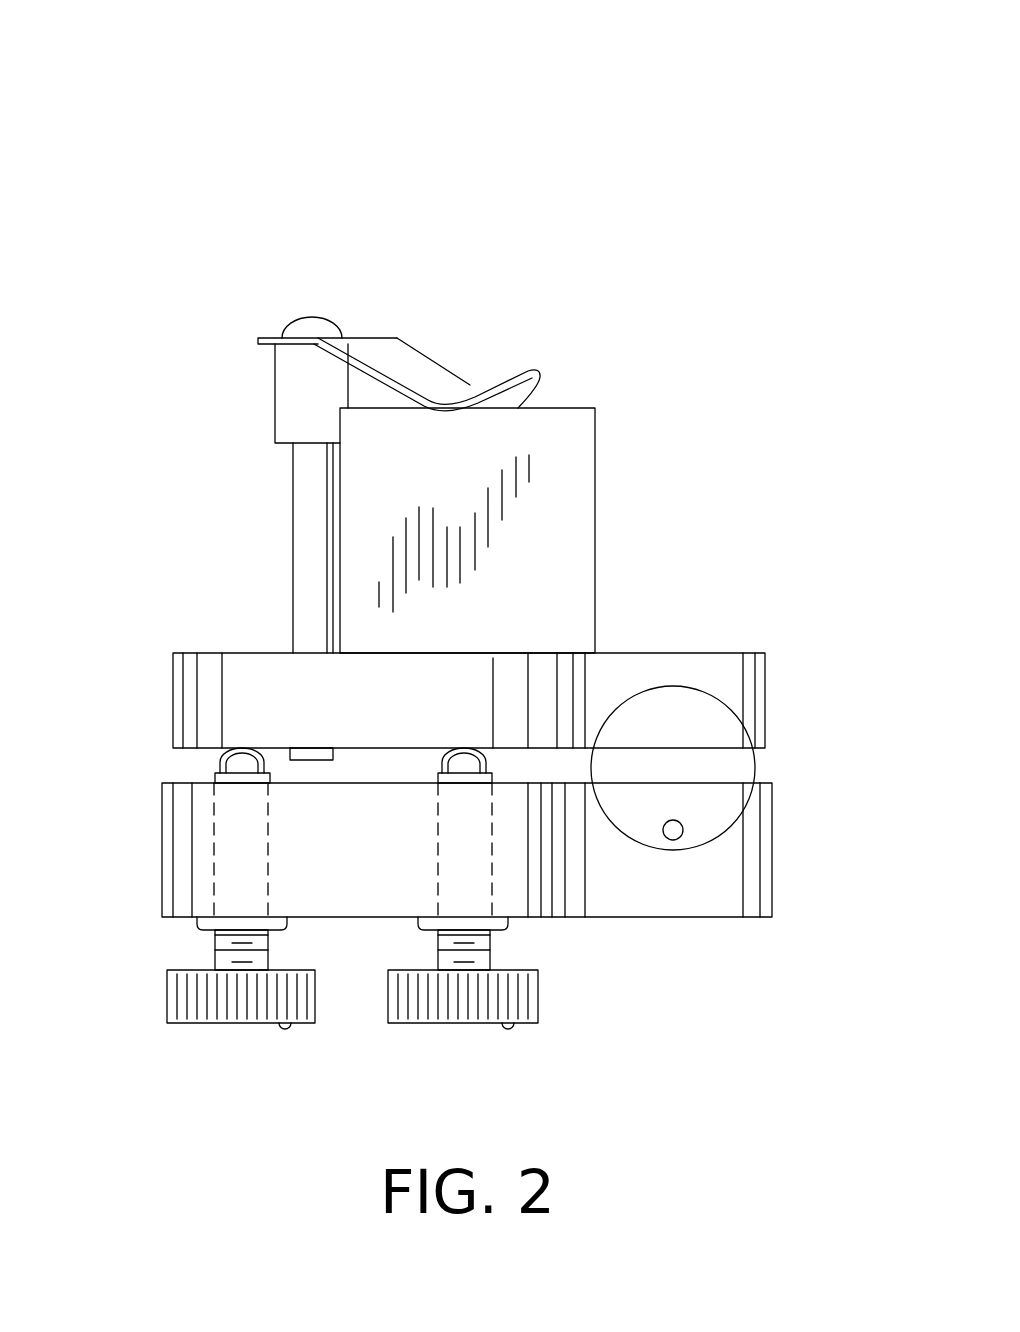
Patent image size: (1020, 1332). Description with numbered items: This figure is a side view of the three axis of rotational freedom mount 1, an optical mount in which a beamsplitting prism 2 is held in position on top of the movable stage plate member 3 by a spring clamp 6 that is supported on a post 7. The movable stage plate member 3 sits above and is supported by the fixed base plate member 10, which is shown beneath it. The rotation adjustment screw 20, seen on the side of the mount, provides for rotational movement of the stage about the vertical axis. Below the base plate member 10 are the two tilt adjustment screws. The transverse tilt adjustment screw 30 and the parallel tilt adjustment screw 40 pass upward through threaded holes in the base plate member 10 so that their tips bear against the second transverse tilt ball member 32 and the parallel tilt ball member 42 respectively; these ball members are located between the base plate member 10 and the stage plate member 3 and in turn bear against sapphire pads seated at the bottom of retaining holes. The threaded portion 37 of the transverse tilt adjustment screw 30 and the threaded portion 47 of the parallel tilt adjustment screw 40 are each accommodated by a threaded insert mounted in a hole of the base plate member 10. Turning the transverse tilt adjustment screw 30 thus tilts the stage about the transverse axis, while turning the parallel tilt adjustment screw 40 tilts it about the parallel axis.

The three axis of rotational freedom mount 1 is at (700, 141).
The beamsplitting prism 2 is at (503, 530).
The movable stage plate member 3 is at (517, 706).
The spring clamp 6 is at (399, 357).
The post 7 is at (280, 498).
The fixed base plate member 10 is at (525, 850).
The rotation adjustment screw 20 is at (695, 778).
The transverse tilt adjustment screw 30 is at (479, 1036).
The second transverse tilt ball member 32 is at (563, 679).
The threaded portion of transverse tilt adjustment screw 37 is at (536, 949).
The parallel tilt adjustment screw 40 is at (215, 1033).
The parallel tilt ball member 42 is at (238, 760).
The threaded portion of parallel tilt adjustment screw 47 is at (169, 954).